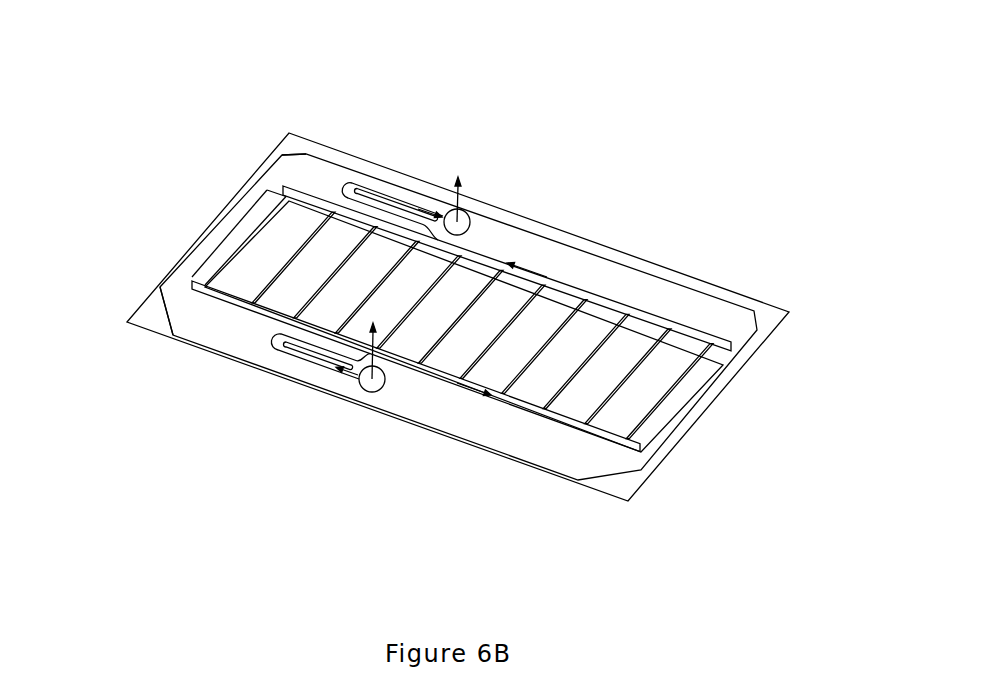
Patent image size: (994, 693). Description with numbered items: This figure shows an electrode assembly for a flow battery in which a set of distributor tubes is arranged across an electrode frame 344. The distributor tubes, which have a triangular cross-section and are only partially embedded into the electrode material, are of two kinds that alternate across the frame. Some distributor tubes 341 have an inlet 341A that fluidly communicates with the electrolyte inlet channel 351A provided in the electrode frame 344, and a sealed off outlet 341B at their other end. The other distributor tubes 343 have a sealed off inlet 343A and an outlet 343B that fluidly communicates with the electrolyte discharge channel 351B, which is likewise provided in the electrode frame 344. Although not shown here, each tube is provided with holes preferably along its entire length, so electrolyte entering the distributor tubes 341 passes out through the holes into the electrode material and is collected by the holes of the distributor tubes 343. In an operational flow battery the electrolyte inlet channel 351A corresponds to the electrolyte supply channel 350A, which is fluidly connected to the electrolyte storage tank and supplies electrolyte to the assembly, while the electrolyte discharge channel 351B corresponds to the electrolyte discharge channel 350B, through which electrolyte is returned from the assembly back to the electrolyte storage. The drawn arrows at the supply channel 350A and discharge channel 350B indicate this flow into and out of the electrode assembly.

The distributor tube 341 is at (253, 236).
The inlet 341A is at (160, 288).
The sealed off outlet 341B is at (287, 194).
The distributor tube 343 is at (287, 262).
The sealed off inlet 343A is at (258, 306).
The outlet 343B is at (346, 186).
The electrode frame 344 is at (522, 232).
The electrolyte supply channel 350A is at (382, 391).
The electrolyte discharge channel 350B is at (467, 206).
The electrolyte inlet channel 351A is at (240, 308).
The electrolyte discharge channel 351B is at (610, 297).